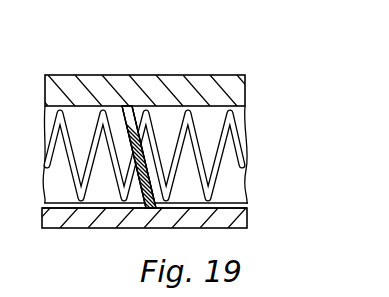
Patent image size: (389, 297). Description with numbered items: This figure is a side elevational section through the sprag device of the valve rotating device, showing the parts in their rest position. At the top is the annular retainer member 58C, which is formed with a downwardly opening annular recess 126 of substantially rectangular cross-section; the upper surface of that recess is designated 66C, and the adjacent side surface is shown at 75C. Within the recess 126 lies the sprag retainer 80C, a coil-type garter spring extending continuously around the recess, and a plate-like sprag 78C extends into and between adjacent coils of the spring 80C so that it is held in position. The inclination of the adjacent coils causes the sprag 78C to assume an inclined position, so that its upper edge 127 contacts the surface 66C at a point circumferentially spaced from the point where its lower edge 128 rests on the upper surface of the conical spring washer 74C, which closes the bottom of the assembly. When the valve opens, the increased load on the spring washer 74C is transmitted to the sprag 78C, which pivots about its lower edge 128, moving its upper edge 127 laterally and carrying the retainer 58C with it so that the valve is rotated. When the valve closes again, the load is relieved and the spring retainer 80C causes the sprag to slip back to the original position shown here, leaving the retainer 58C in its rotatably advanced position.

The annular retainer member 58C is at (92, 90).
The upper surface of the annular recess 66C is at (50, 122).
The upper edge of the sprag 127 is at (127, 106).
The plate-like sprag 78C is at (140, 130).
The sprag retainer 80C is at (192, 133).
The annular recess 126 is at (237, 187).
The spring washer 74C is at (90, 222).
The seat 75C is at (247, 208).
The lower edge of the sprag 128 is at (151, 232).